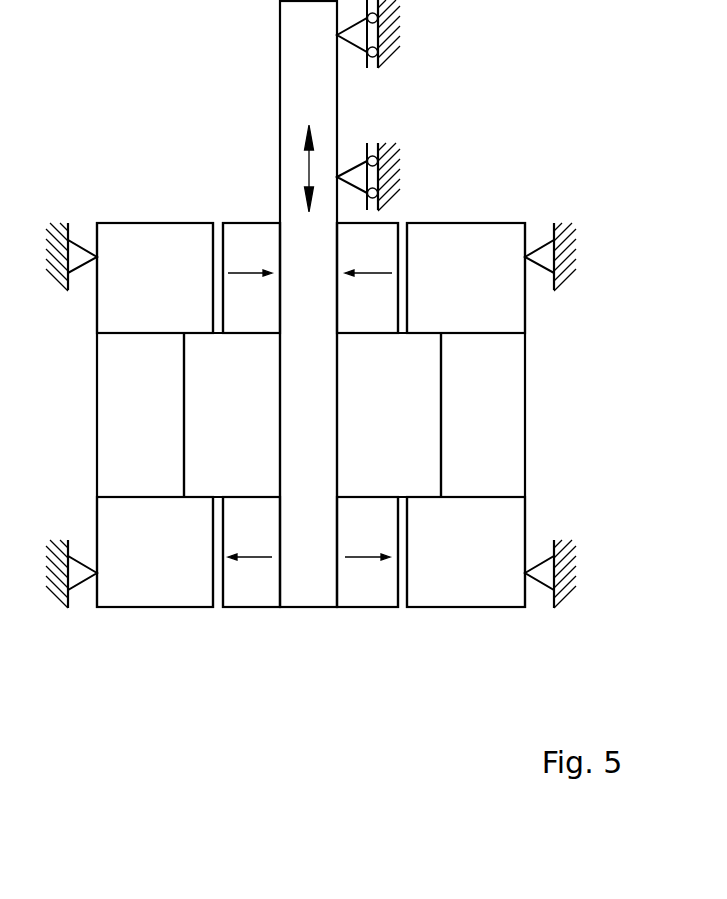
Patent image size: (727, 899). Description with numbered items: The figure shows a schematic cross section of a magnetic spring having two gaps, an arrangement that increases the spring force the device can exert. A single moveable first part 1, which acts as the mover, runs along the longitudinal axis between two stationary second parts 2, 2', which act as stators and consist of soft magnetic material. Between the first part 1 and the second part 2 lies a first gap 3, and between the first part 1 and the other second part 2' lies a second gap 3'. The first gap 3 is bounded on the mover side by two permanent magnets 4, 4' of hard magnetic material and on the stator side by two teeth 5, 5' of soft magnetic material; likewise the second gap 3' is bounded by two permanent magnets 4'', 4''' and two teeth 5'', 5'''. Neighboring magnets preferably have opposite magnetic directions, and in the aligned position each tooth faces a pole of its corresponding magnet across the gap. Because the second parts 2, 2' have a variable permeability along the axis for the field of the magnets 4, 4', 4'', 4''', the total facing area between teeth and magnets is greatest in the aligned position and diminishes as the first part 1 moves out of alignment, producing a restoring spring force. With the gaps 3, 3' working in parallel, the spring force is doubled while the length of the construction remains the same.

The first part 1 is at (296, 630).
The second part 2 is at (155, 462).
The second part 2' is at (466, 462).
The gap 3 is at (232, 462).
The gap 3' is at (389, 462).
The permanent magnet 4 is at (251, 552).
The permanent magnet 4' is at (251, 278).
The permanent magnet 4'' is at (367, 552).
The permanent magnet 4''' is at (367, 278).
The tooth 5 is at (155, 552).
The tooth 5' is at (155, 278).
The tooth 5'' is at (466, 552).
The tooth 5''' is at (466, 278).